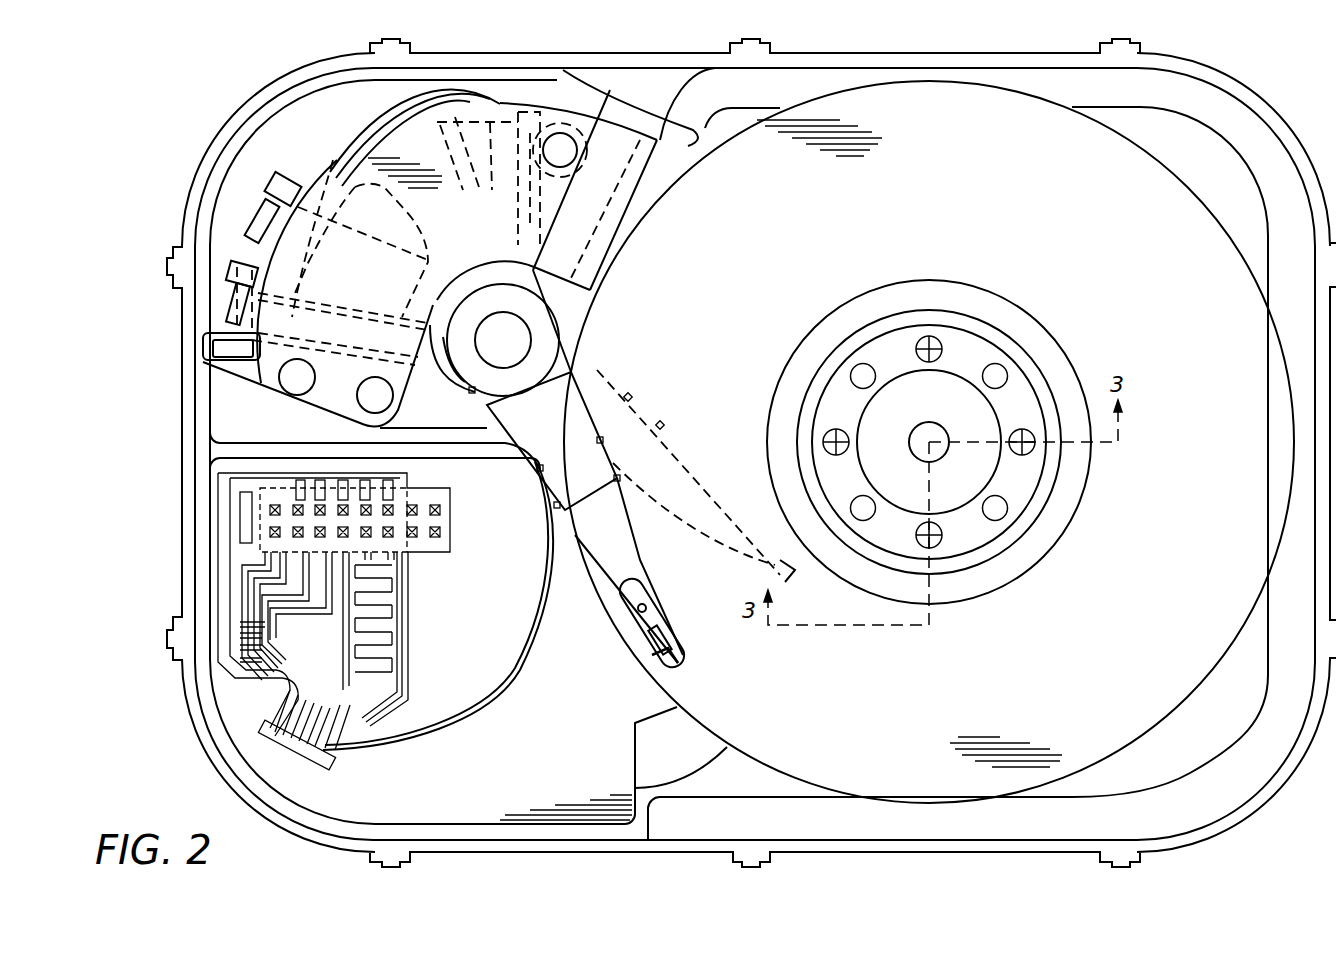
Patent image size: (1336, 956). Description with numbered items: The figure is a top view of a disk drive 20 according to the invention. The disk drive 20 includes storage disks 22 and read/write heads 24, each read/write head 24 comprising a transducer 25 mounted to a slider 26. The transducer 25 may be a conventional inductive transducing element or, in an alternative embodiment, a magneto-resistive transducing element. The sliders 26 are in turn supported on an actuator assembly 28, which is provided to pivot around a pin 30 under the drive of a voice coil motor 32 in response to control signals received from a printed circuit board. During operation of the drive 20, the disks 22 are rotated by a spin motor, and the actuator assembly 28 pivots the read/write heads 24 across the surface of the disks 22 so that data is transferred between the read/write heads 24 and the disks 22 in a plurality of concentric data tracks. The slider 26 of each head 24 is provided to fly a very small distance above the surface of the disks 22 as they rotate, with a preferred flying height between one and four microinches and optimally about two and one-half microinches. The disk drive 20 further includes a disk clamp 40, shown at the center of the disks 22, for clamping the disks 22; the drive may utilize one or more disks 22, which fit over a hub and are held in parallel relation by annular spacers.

The disk drive 20 is at (208, 63).
The storage disks 22 is at (929, 110).
The read/write heads 24 is at (644, 657).
The transducer 25 is at (658, 682).
The slider 26 is at (667, 640).
The actuator assembly 28 is at (562, 410).
The pin 30 is at (517, 354).
The voice coil motor 32 is at (393, 92).
The disk clamp 40 is at (1036, 282).